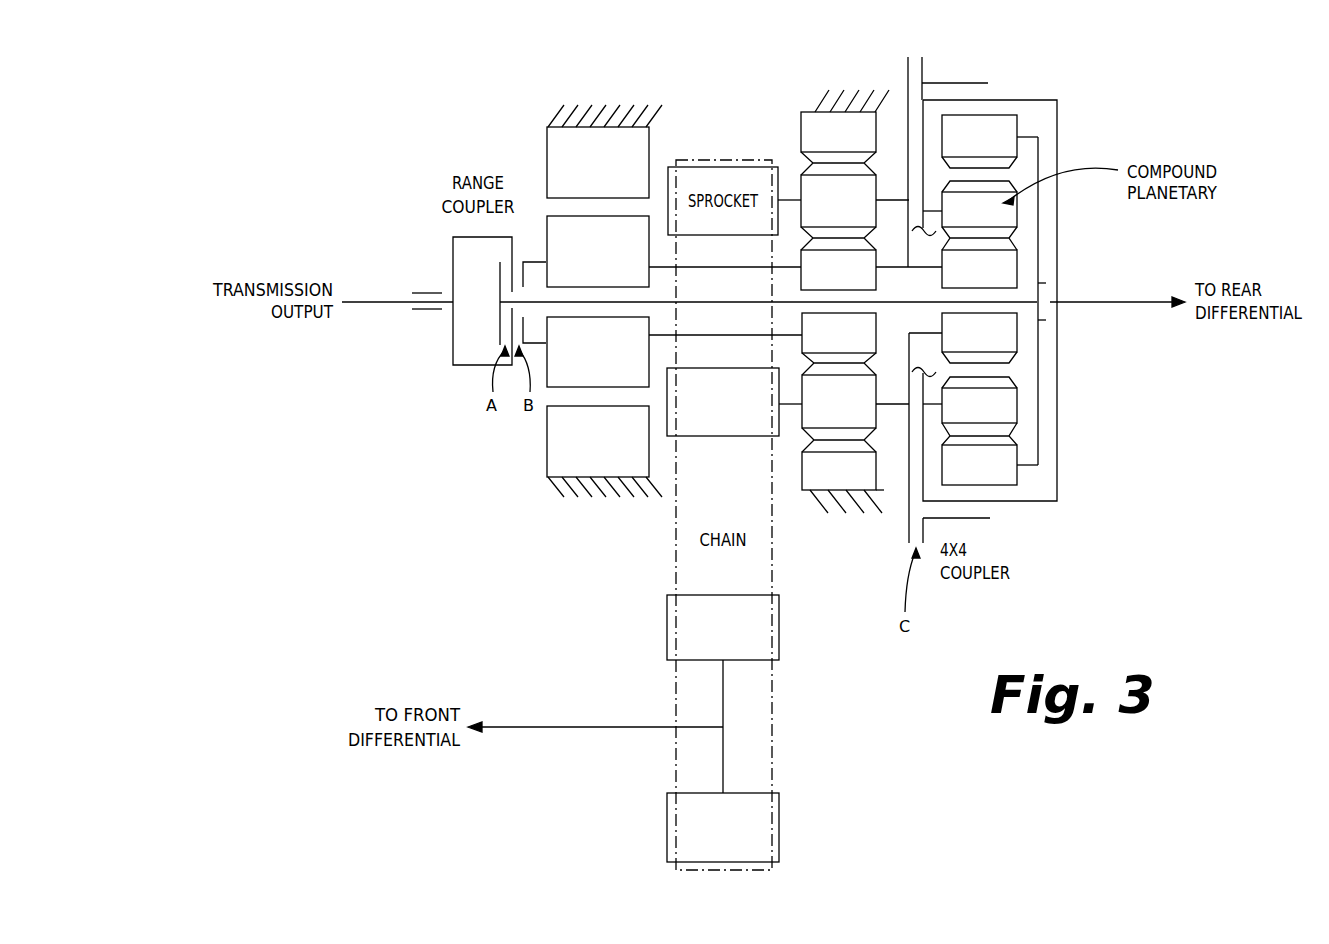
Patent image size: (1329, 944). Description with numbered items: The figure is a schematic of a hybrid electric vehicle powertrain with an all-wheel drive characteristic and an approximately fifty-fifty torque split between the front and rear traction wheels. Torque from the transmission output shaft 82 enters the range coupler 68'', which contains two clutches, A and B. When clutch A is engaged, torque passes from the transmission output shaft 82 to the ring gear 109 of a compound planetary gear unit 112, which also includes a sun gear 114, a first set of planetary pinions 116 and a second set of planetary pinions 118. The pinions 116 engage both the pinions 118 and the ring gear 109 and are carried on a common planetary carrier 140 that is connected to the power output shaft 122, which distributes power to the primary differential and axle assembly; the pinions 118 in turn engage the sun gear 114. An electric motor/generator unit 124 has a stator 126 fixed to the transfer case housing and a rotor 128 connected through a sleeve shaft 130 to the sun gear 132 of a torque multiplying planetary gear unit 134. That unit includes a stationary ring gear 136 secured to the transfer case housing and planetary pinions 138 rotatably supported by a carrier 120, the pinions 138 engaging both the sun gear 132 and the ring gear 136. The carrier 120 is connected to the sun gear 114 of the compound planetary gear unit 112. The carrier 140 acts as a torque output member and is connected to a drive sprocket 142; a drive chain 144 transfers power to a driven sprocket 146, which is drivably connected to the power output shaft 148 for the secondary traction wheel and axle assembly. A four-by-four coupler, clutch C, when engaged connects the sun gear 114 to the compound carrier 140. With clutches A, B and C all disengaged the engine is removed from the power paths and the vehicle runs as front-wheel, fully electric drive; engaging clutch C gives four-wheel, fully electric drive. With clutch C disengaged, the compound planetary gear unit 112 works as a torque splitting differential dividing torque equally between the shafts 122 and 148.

The transmission output shaft 82 is at (377, 304).
The range coupler 68'' is at (481, 326).
The motor/generator unit 124 is at (609, 179).
The stator 126 is at (552, 137).
The rotor 128 is at (558, 378).
The sleeve shaft 130 is at (735, 270).
The sun gear 132 is at (801, 413).
The planetary gear unit 134 is at (798, 434).
The stationary ring gear 136 is at (805, 122).
The planetary pinions 138 is at (852, 181).
The planetary carrier 140 is at (934, 208).
The drive sprocket 142 is at (712, 428).
The drive chain 144 is at (775, 560).
The driven sprocket 146 is at (667, 610).
The power output shaft 148 is at (560, 727).
The ring gear 109 is at (960, 123).
The second set of planetary pinions 118 is at (1025, 177).
The compound planetary gear unit 112 is at (1006, 215).
The sun gear 114 is at (1010, 333).
The first set of planetary pinions 116 is at (1010, 405).
The carrier 120 is at (892, 406).
The power output shaft 122 is at (1148, 304).